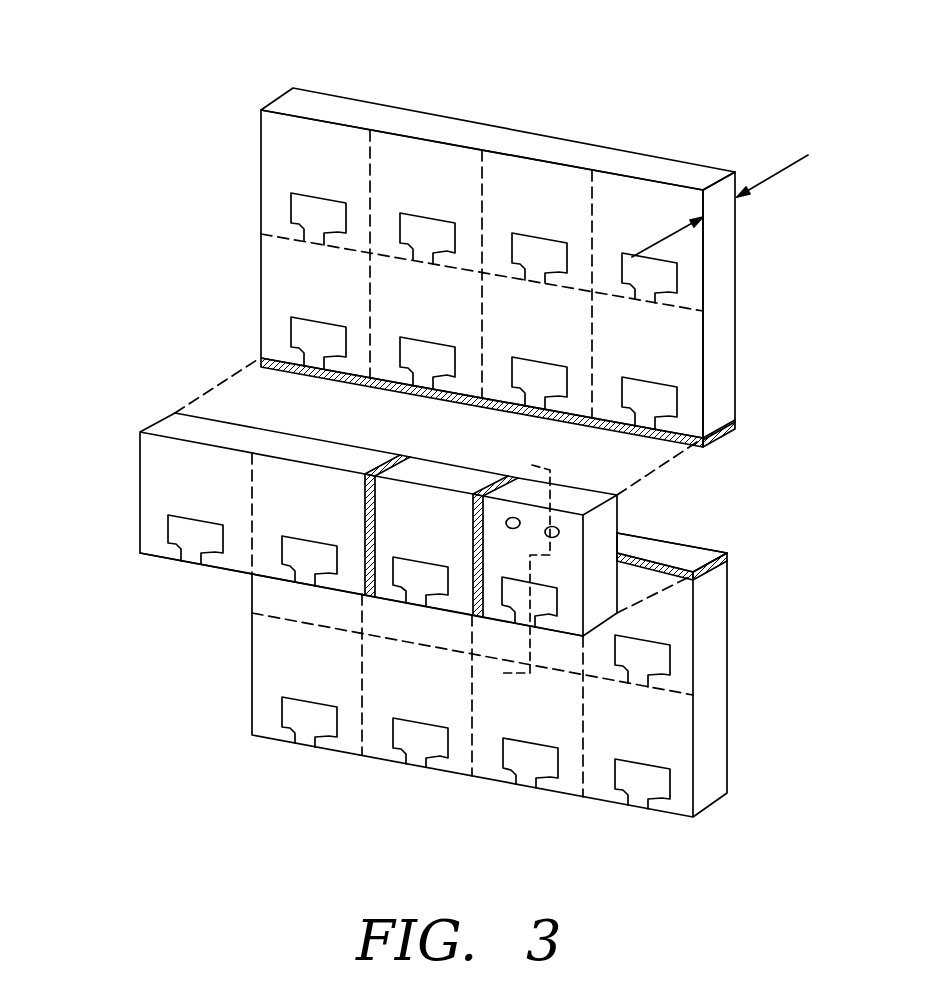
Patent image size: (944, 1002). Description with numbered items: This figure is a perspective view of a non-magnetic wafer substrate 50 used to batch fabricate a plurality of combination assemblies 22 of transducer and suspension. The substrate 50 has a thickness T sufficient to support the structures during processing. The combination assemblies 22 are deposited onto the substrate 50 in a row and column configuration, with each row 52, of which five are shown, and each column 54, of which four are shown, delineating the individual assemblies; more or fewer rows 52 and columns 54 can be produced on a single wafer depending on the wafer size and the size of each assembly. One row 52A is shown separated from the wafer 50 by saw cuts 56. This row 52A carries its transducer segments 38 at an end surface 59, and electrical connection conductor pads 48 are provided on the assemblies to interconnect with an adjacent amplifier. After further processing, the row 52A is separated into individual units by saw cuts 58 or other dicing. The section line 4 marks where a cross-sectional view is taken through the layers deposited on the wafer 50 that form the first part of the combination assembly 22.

The section line 4- 4 is at (503, 673).
The combination assembly 22 is at (315, 332).
The transducer 38 is at (310, 556).
The conductor pads 48 is at (552, 527).
The wafer substrate 50 is at (622, 157).
The row 52 is at (718, 367).
The separated row 52A is at (598, 557).
The column 54 is at (657, 170).
The saw cuts 56 is at (727, 553).
The saw cuts 58 is at (478, 488).
The end surface 59 is at (215, 568).